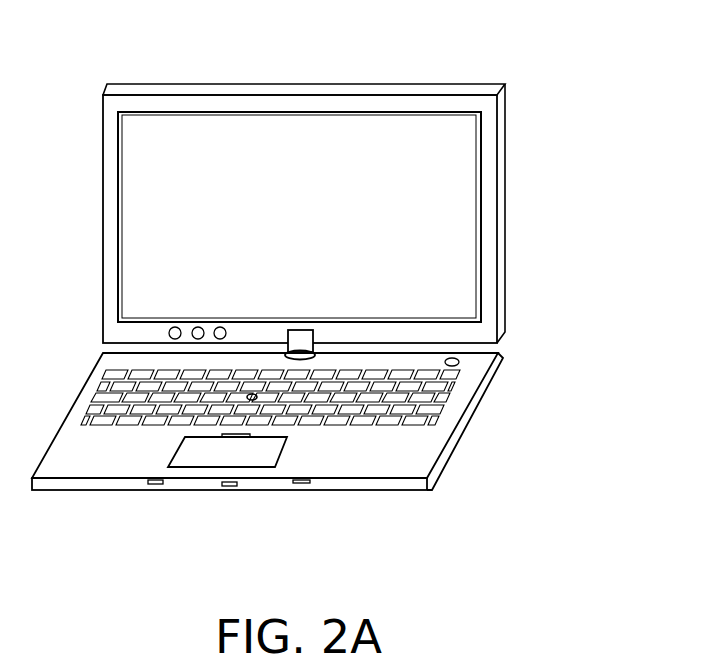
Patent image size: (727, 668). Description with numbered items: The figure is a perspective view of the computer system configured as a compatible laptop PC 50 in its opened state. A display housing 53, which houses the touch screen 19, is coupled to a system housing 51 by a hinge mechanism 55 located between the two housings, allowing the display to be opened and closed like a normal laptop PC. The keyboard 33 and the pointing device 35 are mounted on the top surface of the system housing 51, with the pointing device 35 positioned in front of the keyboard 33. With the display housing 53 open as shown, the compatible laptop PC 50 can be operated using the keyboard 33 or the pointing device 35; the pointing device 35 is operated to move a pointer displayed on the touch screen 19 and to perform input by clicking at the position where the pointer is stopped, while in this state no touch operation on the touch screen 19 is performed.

The compatible laptop PC 50 is at (569, 78).
The display housing 53 is at (505, 220).
The touch screen 19 is at (304, 207).
The hinge mechanism 55 is at (307, 330).
The system housing 51 is at (445, 463).
The keyboard 33 is at (453, 392).
The pointing device 35 is at (192, 455).